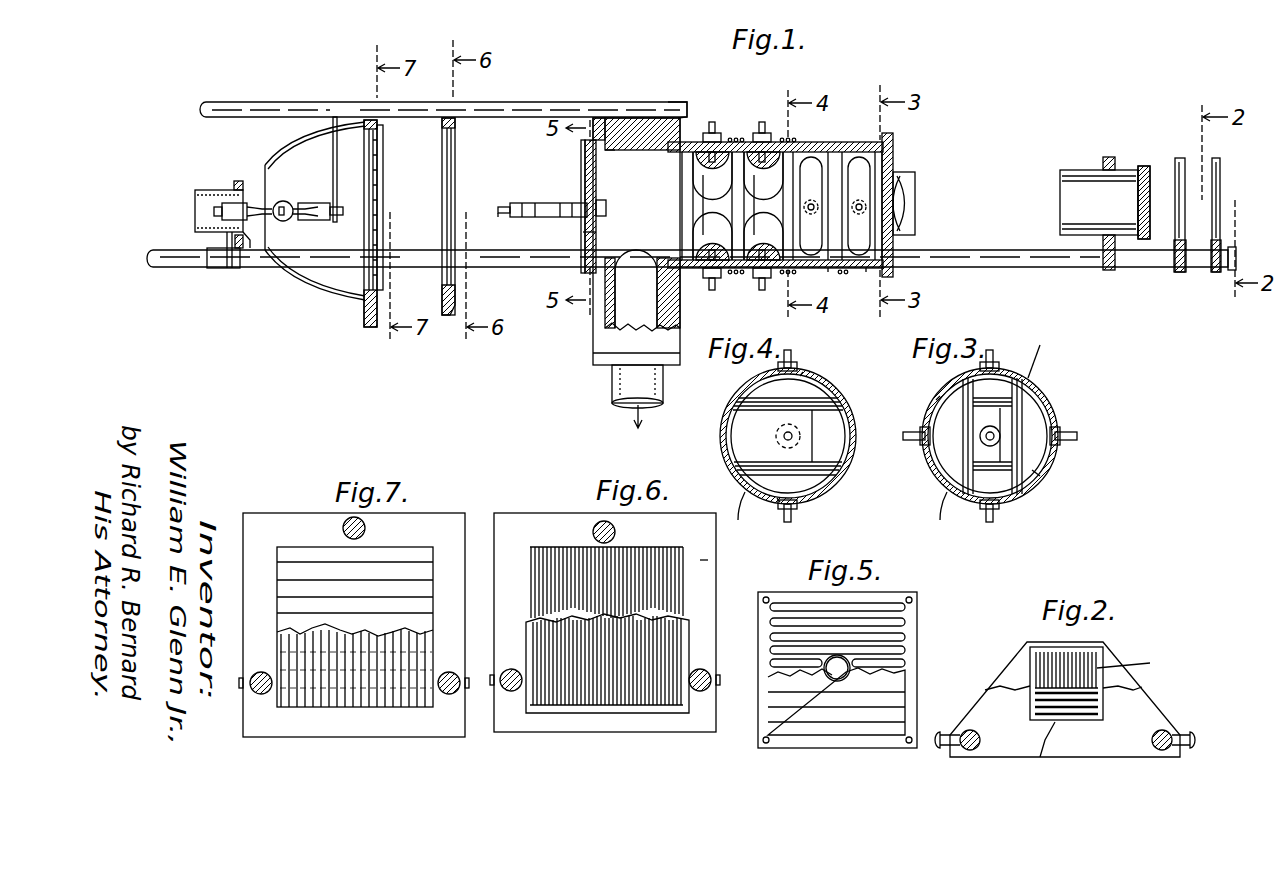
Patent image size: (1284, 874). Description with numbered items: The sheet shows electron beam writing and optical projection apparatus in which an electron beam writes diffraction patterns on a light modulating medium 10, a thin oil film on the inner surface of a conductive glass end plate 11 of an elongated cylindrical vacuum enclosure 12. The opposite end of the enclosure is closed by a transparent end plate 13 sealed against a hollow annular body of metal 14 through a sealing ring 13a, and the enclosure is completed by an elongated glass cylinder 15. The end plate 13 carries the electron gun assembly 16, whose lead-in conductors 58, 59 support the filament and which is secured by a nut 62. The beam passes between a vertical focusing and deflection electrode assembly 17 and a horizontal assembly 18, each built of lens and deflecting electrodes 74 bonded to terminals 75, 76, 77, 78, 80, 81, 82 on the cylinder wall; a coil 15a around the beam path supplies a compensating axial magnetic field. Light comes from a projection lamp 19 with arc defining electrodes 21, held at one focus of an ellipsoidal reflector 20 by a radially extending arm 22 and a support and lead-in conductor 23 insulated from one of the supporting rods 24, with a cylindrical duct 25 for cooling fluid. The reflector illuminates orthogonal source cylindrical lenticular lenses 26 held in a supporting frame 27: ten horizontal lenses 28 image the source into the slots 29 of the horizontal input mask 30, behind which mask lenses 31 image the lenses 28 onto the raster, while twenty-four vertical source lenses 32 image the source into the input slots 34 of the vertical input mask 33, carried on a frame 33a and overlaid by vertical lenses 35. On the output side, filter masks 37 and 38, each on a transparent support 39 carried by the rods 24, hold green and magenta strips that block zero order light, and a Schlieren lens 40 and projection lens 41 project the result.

In FIG. 1, the light modulating medium 10 is at (880, 150).
In FIG. 1, the glass end plate 11 is at (896, 133).
In FIG. 1, the cylindrical vacuum enclosure 12 is at (772, 198).
In FIG. 1, the end plate 13 is at (636, 273).
In FIG. 1, the sealing ring 13a is at (605, 152).
In FIG. 1, the hollow annular body of metal 14 is at (682, 126).
In FIG. 1, the elongated glass cylinder 15 is at (880, 280).
In FIG. 4, the elongated glass cylinder 15 is at (838, 470).
In FIG. 3, the elongated glass cylinder 15 is at (1050, 408).
In FIG. 1, the coil 15a is at (800, 142).
In FIG. 4, the coil 15a is at (826, 396).
In FIG. 3, the coil 15a is at (1025, 395).
In FIG. 1, the electron gun assembly 16 is at (531, 206).
In FIG. 1, the vertical focusing and deflection electrode assembly 17 is at (750, 213).
In FIG. 4, the vertical focusing and deflection electrode assembly 17 is at (784, 411).
In FIG. 1, the horizontal focusing and deflection electrode assembly 18 is at (827, 191).
In FIG. 3, the horizontal focusing and deflection electrode assembly 18 is at (966, 443).
In FIG. 1, the projection lamp 19 is at (282, 204).
In FIG. 1, the ellipsoidal reflector 20 is at (298, 275).
In FIG. 1, the arc defining electrodes 21 is at (283, 215).
In FIG. 1, the radially extending arm 22 is at (338, 160).
In FIG. 1, the support and lead-in conductor 23 is at (208, 248).
In FIG. 1, the supporting rods 24 is at (276, 92).
In FIG. 7, the supporting rods 24 is at (347, 518).
In FIG. 6, the supporting rods 24 is at (598, 520).
In FIG. 2, the supporting rods 24 is at (968, 750).
In FIG. 1, the cylindrical duct 25 is at (206, 191).
In FIG. 1, the source cylindrical lenticular lenses 26 is at (368, 237).
In FIG. 7, the source cylindrical lenticular lenses 26 is at (359, 609).
In FIG. 1, the supporting frame 27 is at (364, 320).
In FIG. 7, the supporting frame 27 is at (450, 520).
In FIG. 1, the horizontal source cylindrical lenticular lenses 28 is at (368, 243).
In FIG. 7, the horizontal source cylindrical lenticular lenses 28 is at (410, 572).
In FIG. 5, the slots 29 is at (906, 621).
In FIG. 1, the horizontal input mask 30 is at (594, 206).
In FIG. 5, the horizontal input mask 30 is at (782, 592).
In FIG. 1, the mask cylindrical lenticular lenses 31 is at (583, 232).
In FIG. 5, the mask cylindrical lenticular lenses 31 is at (900, 700).
In FIG. 1, the vertically extending source lenses 32 is at (383, 182).
In FIG. 7, the vertically extending source lenses 32 is at (310, 710).
In FIG. 1, the vertical input mask 33 is at (447, 242).
In FIG. 6, the vertical input mask 33 is at (672, 715).
In FIG. 1, the frame 33a is at (449, 318).
In FIG. 6, the frame 33a is at (705, 562).
In FIG. 6, the input slots 34 is at (606, 706).
In FIG. 1, the vertically extending cylindrical lenticular lenses 35 is at (467, 146).
In FIG. 6, the vertically extending cylindrical lenticular lenses 35 is at (540, 547).
In FIG. 1, the output filter mask 37 is at (1186, 168).
In FIG. 2, the output filter mask 37 is at (1052, 652).
In FIG. 1, the output filter mask 38 is at (1221, 172).
In FIG. 2, the output filter mask 38 is at (1036, 710).
In FIG. 1, the support 39 is at (1177, 272).
In FIG. 2, the support 39 is at (1020, 665).
In FIG. 1, the Schlieren lens 40 is at (906, 195).
In FIG. 1, the projection lens 41 is at (1075, 172).
In FIG. 1, the lead-in conductor 58 is at (500, 206).
In FIG. 1, the lead-in conductor 59 is at (497, 218).
In FIG. 1, the nut 62 is at (606, 206).
In FIG. 1, the lens and deflecting electrode 74 is at (706, 230).
In FIG. 4, the lens and deflecting electrode 74 is at (806, 462).
In FIG. 3, the lens and deflecting electrode 74 is at (996, 462).
In FIG. 1, the terminal 75 is at (721, 134).
In FIG. 1, the terminal 76 is at (708, 276).
In FIG. 1, the terminal 77 is at (768, 140).
In FIG. 4, the terminal 77 is at (800, 378).
In FIG. 1, the terminal 78 is at (772, 276).
In FIG. 4, the terminal 78 is at (795, 500).
In FIG. 1, the terminal 80 is at (822, 270).
In FIG. 3, the terminal 81 is at (940, 400).
In FIG. 1, the terminal 82 is at (870, 270).
In FIG. 3, the terminal 82 is at (1040, 470).